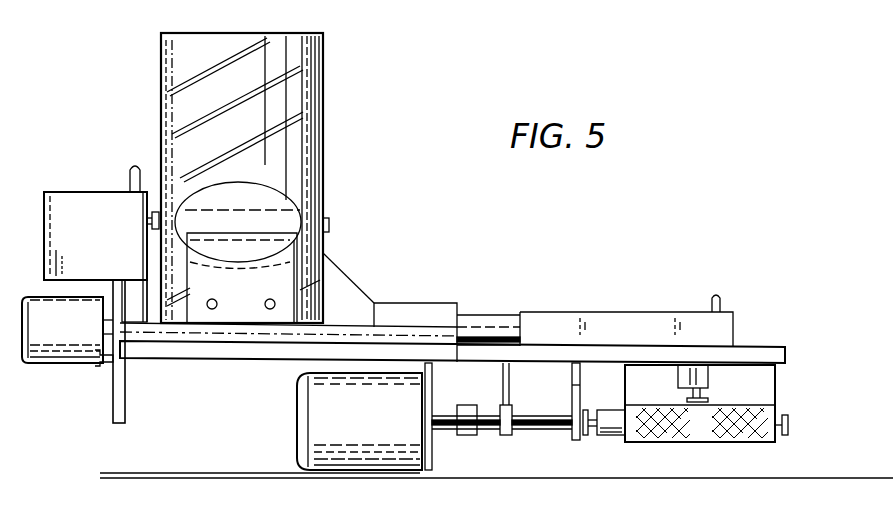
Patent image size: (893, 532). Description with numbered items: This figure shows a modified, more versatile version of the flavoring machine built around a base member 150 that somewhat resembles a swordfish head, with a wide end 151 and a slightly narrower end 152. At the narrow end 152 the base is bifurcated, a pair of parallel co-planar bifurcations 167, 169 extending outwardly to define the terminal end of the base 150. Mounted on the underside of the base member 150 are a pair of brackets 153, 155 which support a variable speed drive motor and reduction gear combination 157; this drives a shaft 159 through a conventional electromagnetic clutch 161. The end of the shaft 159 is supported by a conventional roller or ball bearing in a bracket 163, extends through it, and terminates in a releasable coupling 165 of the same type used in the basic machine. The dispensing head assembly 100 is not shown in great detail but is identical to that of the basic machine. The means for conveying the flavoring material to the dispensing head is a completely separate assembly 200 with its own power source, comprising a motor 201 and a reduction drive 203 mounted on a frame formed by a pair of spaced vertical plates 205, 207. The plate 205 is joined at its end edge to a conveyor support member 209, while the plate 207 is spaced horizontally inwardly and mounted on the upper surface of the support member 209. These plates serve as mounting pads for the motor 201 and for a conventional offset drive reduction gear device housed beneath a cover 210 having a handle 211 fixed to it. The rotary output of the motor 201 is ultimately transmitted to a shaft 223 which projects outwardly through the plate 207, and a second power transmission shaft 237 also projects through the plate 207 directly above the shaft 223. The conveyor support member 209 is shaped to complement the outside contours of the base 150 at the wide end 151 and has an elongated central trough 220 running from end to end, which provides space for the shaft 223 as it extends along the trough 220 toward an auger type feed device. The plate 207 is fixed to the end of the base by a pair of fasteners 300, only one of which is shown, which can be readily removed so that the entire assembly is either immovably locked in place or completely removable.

The dispensing head assembly 100 is at (762, 449).
The base member 150 is at (400, 348).
The wide end 151 is at (145, 360).
The narrower end 152 is at (547, 346).
The bracket 153 is at (438, 458).
The bracket 155 is at (517, 436).
The variable speed drive motor and reduction gear combination 157 is at (378, 441).
The shaft 159 is at (548, 432).
The electromagnetic clutch 161 is at (472, 406).
The bracket 163 is at (580, 404).
The releasable coupling 165 is at (610, 422).
The bifurcation 167 is at (720, 352).
The bifurcation 169 is at (765, 355).
The assembly 200 is at (358, 290).
The motor 201 is at (73, 360).
The reduction drive 203 is at (65, 203).
The vertical plate 205 is at (108, 297).
The vertical plate 207 is at (140, 330).
The conveyor support member 209 is at (243, 327).
The cover 210 is at (118, 190).
The handle 211 is at (137, 166).
The trough 220 is at (296, 326).
The shaft 223 is at (150, 327).
The second shaft 237 is at (330, 226).
The fastener 300 is at (100, 360).